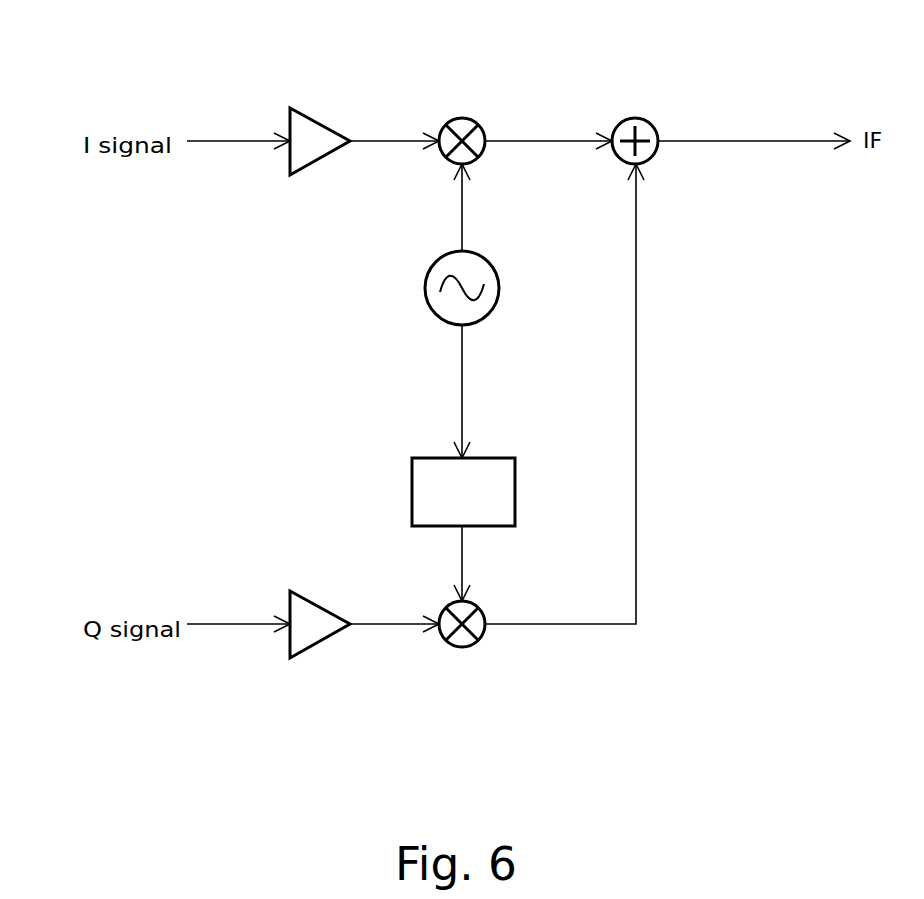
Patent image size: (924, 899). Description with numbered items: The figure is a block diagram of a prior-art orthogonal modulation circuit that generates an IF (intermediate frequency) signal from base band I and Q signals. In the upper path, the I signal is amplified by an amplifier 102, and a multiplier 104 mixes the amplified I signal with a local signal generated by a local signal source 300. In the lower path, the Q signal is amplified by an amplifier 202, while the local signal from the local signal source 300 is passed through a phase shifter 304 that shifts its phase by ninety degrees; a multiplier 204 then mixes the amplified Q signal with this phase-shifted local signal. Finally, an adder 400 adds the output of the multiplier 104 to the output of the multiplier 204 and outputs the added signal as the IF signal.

The amplifier 102 is at (325, 125).
The multiplier 104 is at (462, 118).
The adder 400 is at (635, 118).
The local signal source 300 is at (477, 323).
The phase shifter 304 is at (515, 488).
The amplifier 202 is at (315, 650).
The multiplier 204 is at (462, 648).